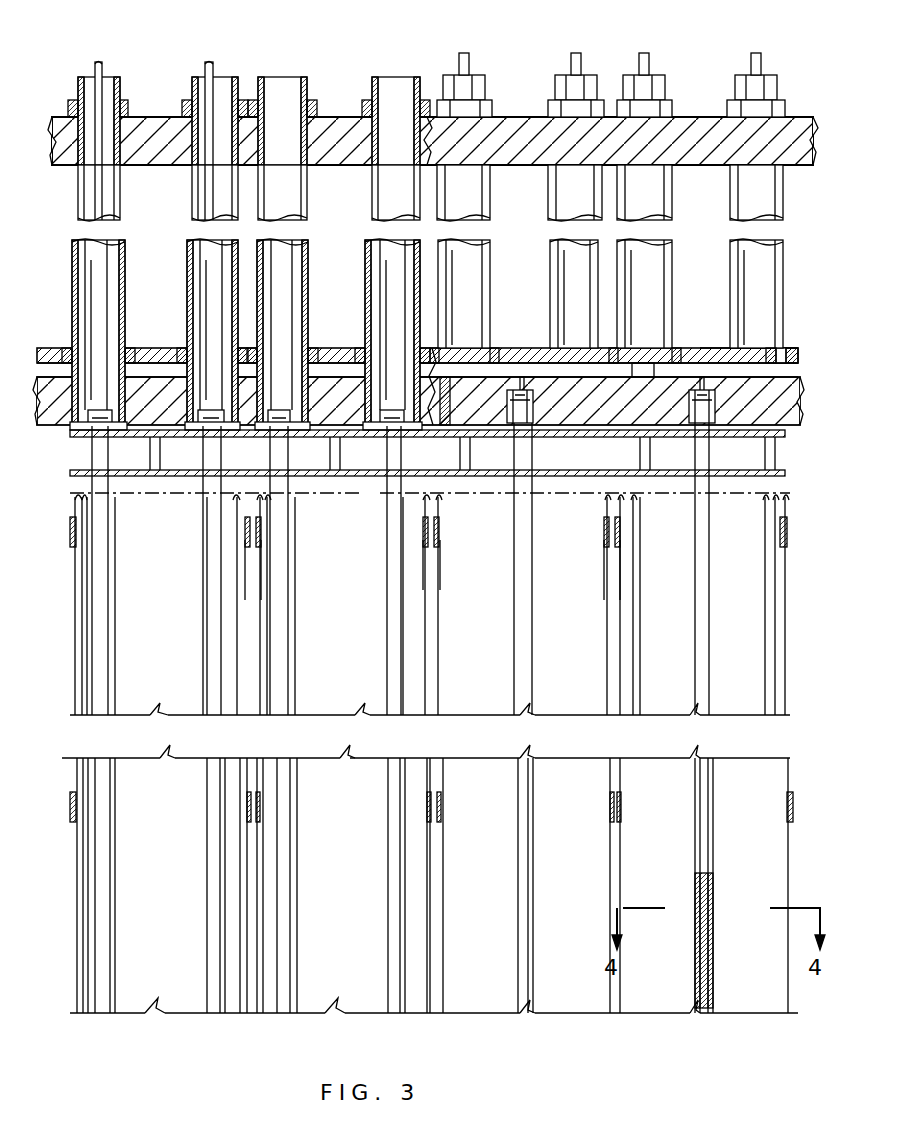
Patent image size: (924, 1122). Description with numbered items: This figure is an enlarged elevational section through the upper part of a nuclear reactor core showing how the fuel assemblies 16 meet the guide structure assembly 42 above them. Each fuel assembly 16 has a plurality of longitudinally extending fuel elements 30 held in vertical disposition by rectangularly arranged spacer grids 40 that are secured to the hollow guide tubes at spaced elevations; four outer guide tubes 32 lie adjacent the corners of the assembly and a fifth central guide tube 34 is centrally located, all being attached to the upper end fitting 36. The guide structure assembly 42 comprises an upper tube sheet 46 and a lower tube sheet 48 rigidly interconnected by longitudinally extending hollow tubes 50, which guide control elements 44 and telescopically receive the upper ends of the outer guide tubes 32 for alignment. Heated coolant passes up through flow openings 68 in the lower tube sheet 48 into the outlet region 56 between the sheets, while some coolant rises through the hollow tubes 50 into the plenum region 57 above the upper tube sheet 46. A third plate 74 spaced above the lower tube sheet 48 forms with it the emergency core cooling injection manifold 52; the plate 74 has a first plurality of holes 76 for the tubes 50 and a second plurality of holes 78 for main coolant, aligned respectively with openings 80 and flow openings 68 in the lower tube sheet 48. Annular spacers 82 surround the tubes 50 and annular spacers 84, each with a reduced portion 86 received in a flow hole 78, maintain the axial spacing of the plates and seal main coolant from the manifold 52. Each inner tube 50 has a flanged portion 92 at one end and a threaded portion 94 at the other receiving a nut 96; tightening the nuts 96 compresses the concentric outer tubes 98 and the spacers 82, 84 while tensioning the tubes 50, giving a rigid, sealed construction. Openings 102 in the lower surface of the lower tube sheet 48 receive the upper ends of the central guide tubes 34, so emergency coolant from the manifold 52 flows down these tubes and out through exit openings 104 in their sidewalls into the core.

The fuel assembly 16 is at (245, 645).
The fuel element 30 is at (255, 548).
The outer guide tube 32 is at (75, 435).
The central guide tube 34 is at (150, 465).
The upper end fitting 36 is at (400, 473).
The spacer grid 40 is at (788, 530).
The guide structure assembly 42 is at (783, 268).
The control element 44 is at (102, 68).
The upper tube sheet 46 is at (812, 165).
The lower tube sheet 48 is at (770, 395).
The hollow tube 50 is at (72, 292).
The injection manifold 52 is at (135, 360).
The outlet region 56 is at (531, 262).
The plenum region 57 is at (490, 34).
The flow opening 68 is at (447, 400).
The third plate 74 is at (750, 350).
The first plurality of holes 76 is at (118, 350).
The second plurality of holes 78 is at (780, 350).
The hollow tube opening 80 is at (200, 395).
The annular spacer 82 is at (67, 348).
The annular spacer 84 is at (452, 362).
The reduced portion 86 is at (640, 350).
The flanged portion 92 is at (72, 428).
The threaded portion 94 is at (78, 92).
The nut 96 is at (125, 112).
The outer tube 98 is at (121, 200).
The opening 102 is at (540, 395).
The exit opening 104 is at (714, 905).